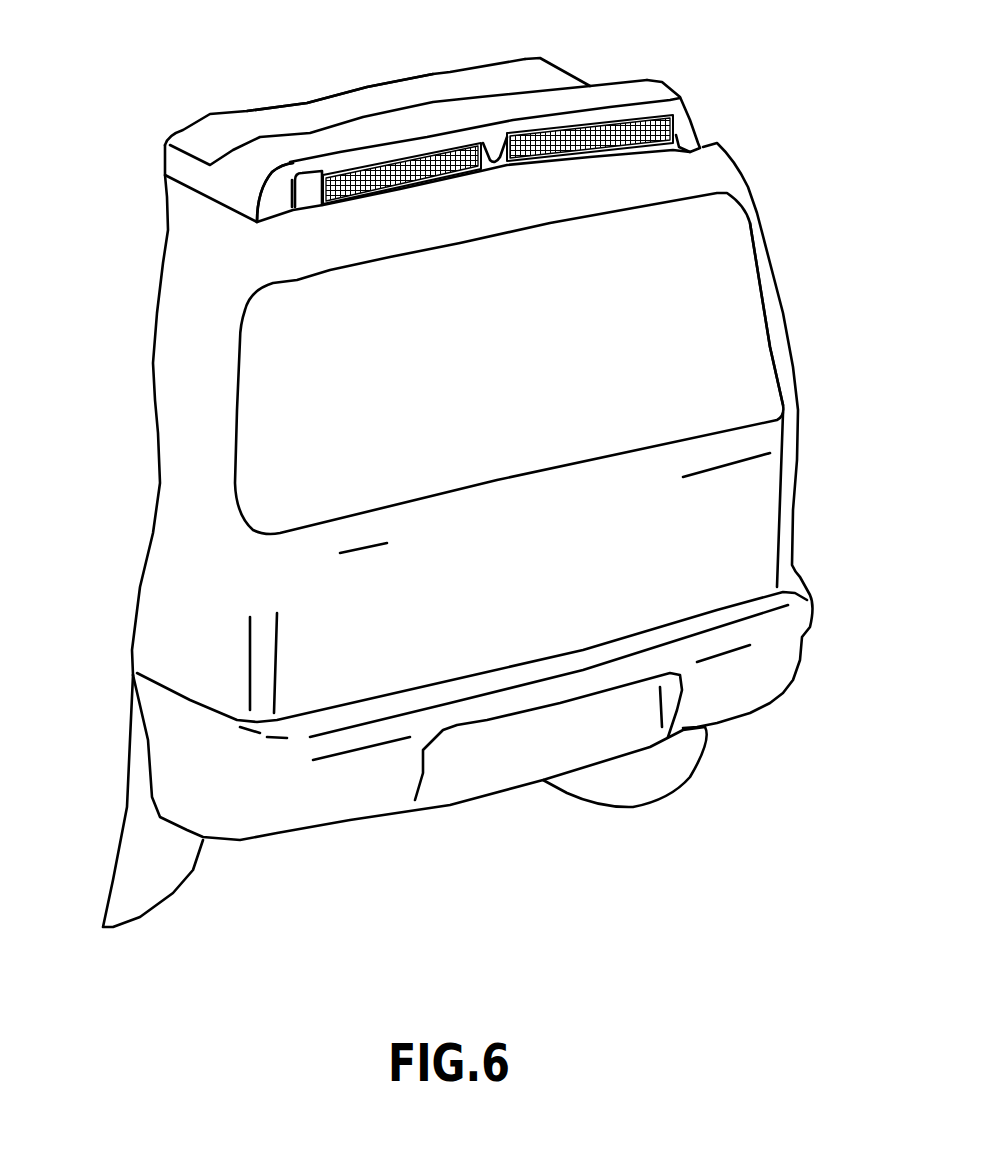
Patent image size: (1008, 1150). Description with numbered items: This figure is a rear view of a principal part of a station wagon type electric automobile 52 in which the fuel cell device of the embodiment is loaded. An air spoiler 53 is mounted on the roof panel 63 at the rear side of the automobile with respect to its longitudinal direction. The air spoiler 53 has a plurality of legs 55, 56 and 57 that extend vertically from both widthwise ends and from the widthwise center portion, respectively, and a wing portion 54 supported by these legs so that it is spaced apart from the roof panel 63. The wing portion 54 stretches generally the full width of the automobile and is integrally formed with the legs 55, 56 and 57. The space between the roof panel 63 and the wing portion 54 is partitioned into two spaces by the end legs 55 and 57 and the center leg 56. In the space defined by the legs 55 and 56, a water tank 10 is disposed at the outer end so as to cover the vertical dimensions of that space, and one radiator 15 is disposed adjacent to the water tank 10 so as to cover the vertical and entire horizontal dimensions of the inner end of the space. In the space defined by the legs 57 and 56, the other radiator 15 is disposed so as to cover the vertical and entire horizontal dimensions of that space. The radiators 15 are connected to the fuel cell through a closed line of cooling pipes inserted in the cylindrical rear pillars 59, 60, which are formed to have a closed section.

The water tank 10 is at (302, 170).
The radiator 15 is at (387, 190).
The electric automobile 52 is at (789, 304).
The air spoiler 53 is at (679, 75).
The wing portion 54 is at (387, 122).
The leg 55 is at (273, 205).
The leg 56 is at (493, 163).
The leg 57 is at (690, 141).
The rear pillar 59 is at (207, 457).
The rear pillar 60 is at (785, 358).
The roof panel 63 is at (457, 87).